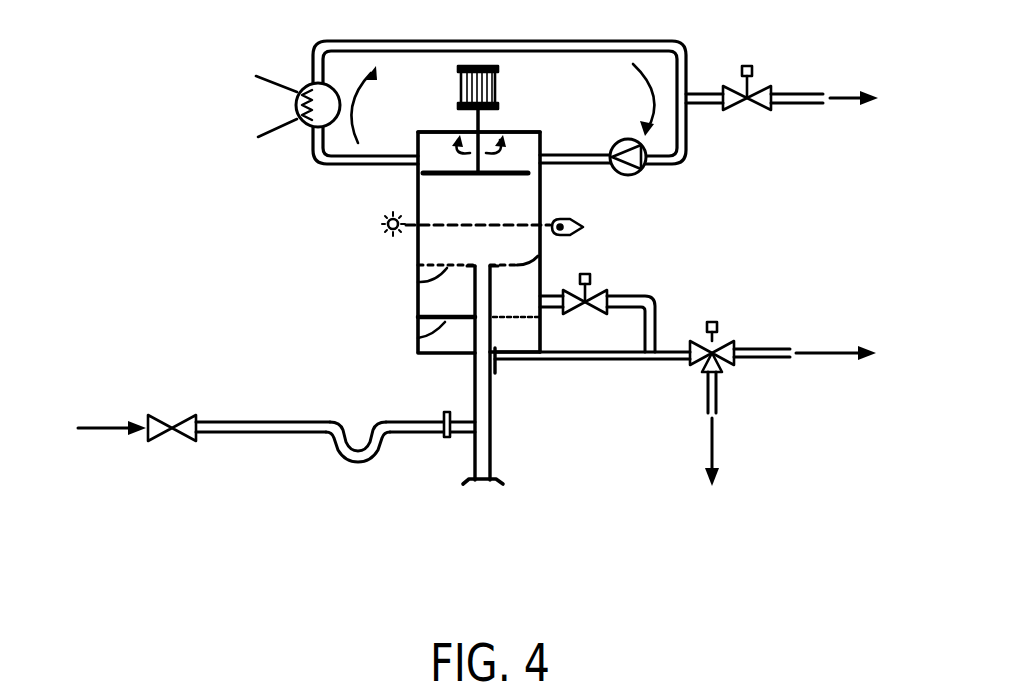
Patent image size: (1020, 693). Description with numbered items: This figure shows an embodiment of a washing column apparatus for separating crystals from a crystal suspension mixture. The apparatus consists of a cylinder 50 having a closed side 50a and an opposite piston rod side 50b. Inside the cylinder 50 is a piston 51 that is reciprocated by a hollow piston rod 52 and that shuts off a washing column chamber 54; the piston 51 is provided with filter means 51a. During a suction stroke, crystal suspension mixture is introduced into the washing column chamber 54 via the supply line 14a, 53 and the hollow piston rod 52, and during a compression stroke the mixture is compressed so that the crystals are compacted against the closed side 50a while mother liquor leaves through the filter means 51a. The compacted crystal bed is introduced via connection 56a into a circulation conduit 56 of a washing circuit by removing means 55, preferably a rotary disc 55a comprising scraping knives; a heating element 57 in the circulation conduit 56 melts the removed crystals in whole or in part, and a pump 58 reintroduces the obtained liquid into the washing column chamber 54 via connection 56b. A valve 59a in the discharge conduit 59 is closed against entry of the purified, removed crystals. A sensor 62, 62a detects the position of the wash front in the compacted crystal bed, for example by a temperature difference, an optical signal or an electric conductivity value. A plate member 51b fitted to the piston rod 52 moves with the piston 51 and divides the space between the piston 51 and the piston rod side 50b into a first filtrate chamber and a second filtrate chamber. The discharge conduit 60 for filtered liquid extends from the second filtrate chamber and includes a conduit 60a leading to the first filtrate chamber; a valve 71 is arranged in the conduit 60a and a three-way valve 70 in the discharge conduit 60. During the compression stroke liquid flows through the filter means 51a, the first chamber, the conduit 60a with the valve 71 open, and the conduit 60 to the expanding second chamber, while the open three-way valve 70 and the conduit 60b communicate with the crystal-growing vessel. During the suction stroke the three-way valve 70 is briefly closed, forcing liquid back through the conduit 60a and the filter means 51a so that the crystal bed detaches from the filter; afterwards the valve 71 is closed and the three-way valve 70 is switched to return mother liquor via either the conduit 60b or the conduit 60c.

The supply line 14a is at (340, 483).
The cylinder 50 is at (418, 300).
The closed side 50a is at (447, 131).
The piston rod side 50b is at (452, 357).
The piston 51 is at (418, 279).
The filter means 51a is at (540, 255).
The plate member 51b is at (418, 345).
The piston rod 52 is at (490, 458).
The supply pipe 53 is at (276, 462).
The washing column chamber 54 is at (497, 255).
The removing means 55 is at (498, 81).
The rotary disc 55a is at (528, 172).
The circulation conduit 56 is at (650, 40).
The connection 56a is at (398, 142).
The connection 56b is at (554, 141).
The heating element 57 is at (296, 105).
The pump 58 is at (647, 165).
The discharge conduit 59 is at (803, 106).
The valve 59a is at (731, 108).
The discharge conduit 60 is at (588, 359).
The conduit 60a is at (687, 291).
The conduit 60b is at (717, 396).
The conduit 60c is at (763, 349).
The sensor 62 is at (568, 238).
The sensor 62a is at (382, 227).
The three-way valve 70 is at (728, 362).
The valve 71 is at (593, 314).